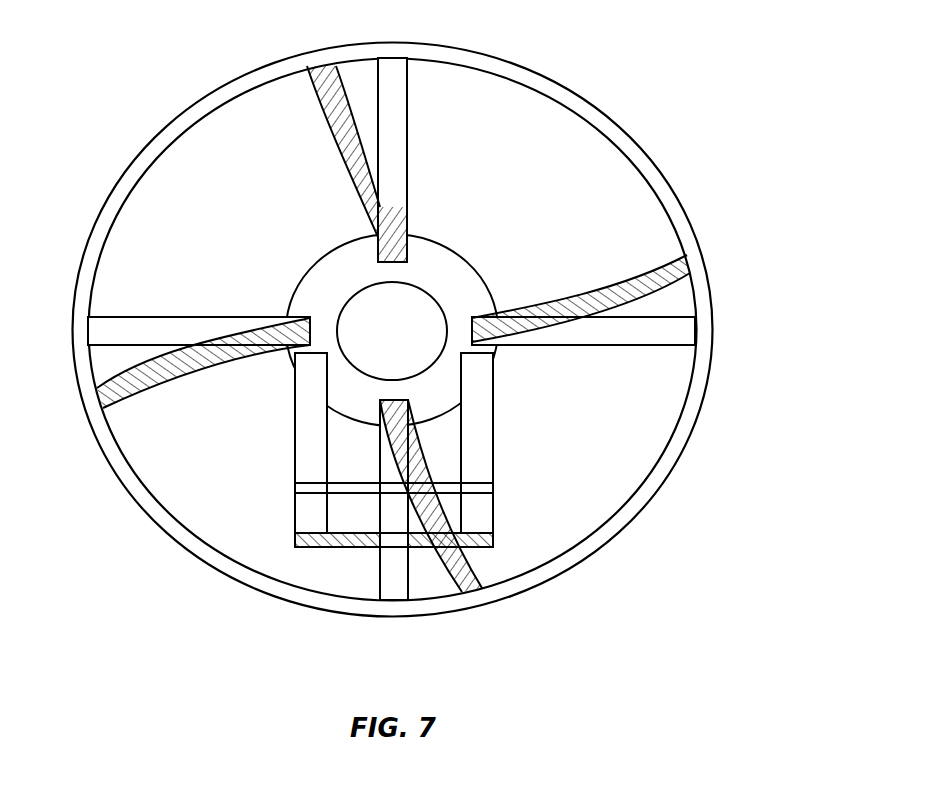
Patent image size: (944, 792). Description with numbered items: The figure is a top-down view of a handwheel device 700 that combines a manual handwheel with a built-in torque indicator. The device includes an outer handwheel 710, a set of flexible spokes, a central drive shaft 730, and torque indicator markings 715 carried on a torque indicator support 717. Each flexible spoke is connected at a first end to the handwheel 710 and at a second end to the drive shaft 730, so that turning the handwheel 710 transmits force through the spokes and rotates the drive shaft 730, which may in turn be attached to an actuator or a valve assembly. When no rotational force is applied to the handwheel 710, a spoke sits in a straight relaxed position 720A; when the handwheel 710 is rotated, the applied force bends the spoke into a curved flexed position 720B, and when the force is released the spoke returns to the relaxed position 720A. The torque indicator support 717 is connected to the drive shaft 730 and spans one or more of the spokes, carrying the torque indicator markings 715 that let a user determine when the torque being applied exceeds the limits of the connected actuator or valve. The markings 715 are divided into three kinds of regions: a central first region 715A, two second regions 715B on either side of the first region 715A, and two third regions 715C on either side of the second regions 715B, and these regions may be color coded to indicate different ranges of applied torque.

The handwheel device 700 is at (91, 105).
The handwheel 710 is at (653, 175).
The drive shaft 730 is at (447, 275).
The relaxed position 720A is at (640, 333).
The flexed position 720B is at (668, 275).
The torque indicator markings 715 is at (333, 516).
The torque indicator support 717 is at (307, 442).
The first region 715A is at (413, 548).
The second regions 715B is at (353, 548).
The third regions 715C is at (310, 548).